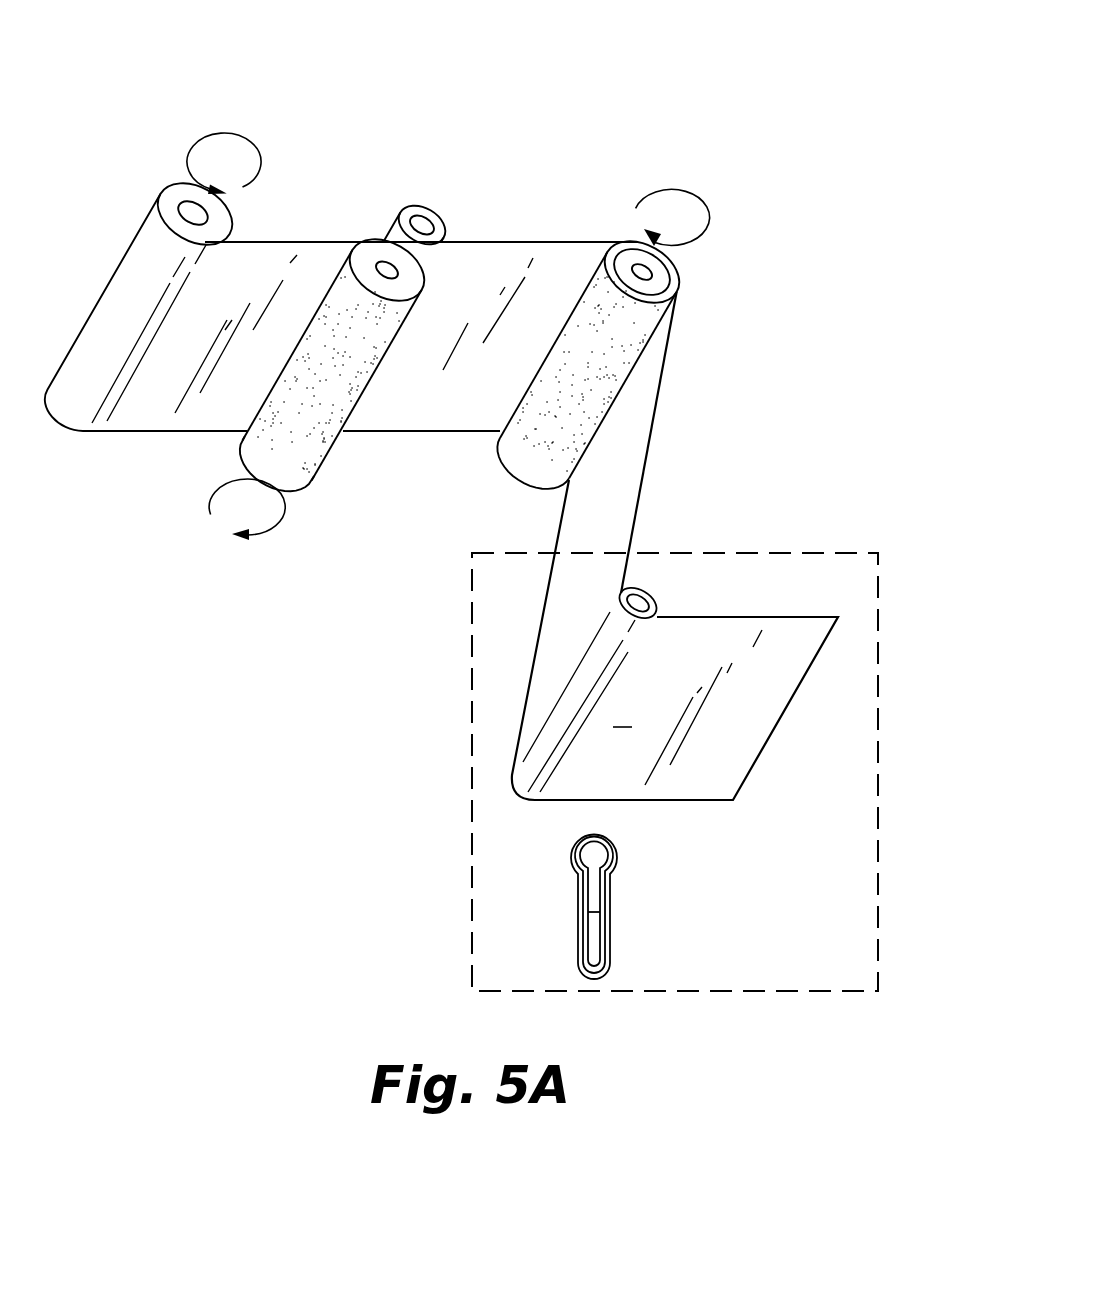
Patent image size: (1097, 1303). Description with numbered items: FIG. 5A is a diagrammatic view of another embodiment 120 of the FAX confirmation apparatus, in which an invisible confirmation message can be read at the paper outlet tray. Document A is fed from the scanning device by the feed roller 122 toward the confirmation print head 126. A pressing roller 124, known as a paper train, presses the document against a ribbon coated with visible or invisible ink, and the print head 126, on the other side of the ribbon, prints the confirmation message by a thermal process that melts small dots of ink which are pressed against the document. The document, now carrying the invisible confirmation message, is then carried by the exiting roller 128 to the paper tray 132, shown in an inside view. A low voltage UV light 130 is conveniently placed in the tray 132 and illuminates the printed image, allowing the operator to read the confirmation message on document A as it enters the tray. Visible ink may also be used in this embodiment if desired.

The FAX confirmation apparatus embodiment 120 is at (799, 84).
The feed roller 122 is at (163, 192).
The pressing roller 124 is at (305, 487).
The confirmation print head 126 is at (448, 226).
The exiting roller 128 is at (508, 480).
The low voltage UV light 130 is at (612, 882).
The paper tray 132 is at (471, 783).